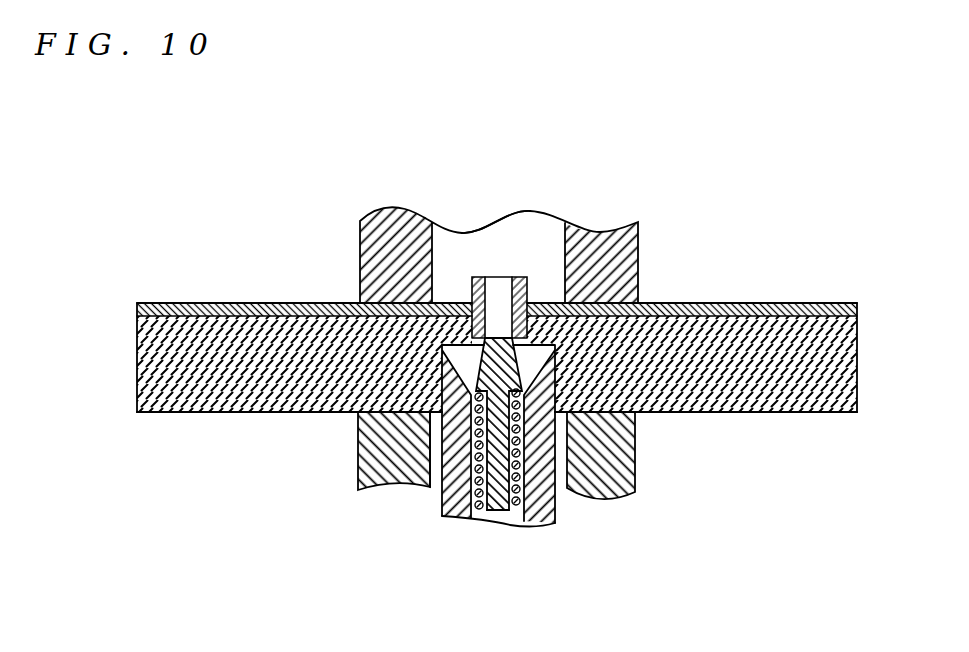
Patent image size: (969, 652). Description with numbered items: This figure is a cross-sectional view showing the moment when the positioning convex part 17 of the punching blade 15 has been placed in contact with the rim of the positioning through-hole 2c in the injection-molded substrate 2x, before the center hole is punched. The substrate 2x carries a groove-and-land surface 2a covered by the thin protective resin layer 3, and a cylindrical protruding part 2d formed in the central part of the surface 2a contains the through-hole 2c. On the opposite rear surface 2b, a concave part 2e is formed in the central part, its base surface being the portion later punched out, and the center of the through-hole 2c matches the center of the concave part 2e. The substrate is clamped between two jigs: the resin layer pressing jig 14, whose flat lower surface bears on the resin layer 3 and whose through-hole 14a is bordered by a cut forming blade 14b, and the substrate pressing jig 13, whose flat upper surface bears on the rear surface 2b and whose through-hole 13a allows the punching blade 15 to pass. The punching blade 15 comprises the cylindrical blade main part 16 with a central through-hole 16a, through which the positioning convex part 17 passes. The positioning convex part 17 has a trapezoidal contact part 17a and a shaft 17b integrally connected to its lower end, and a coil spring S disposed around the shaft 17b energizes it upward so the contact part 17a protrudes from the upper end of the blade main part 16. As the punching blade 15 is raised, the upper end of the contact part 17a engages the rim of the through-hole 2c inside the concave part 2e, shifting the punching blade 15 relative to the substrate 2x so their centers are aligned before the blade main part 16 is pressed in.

The surface 2a is at (749, 310).
The rear surface 2b is at (748, 422).
The positioning through-hole 2c is at (492, 296).
The cylindrical protruding part 2d is at (527, 291).
The concave part 2e is at (580, 421).
The substrate 2x is at (836, 374).
The resin layer 3 is at (858, 311).
The pressing jig 13 is at (632, 476).
The through-hole 13a is at (438, 487).
The pressing jig 14 is at (640, 252).
The through-hole 14a is at (535, 244).
The cut forming blade 14b is at (410, 315).
The punching blade 15 is at (451, 531).
The blade main part 16 is at (555, 517).
The through-hole 16a is at (518, 528).
The positioning convex part 17 is at (470, 351).
The contact part 17a is at (498, 338).
The shaft 17b is at (496, 514).
The coil spring S is at (478, 512).